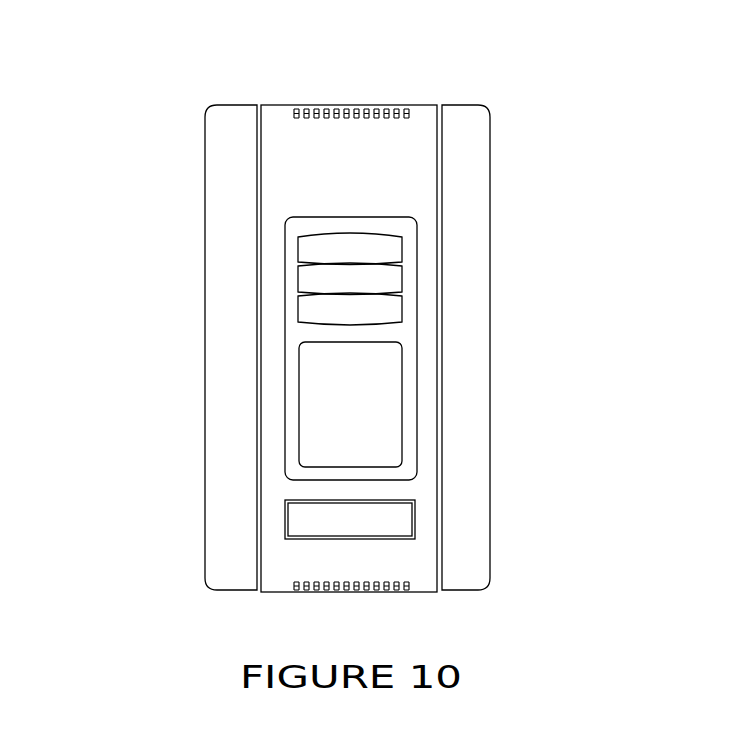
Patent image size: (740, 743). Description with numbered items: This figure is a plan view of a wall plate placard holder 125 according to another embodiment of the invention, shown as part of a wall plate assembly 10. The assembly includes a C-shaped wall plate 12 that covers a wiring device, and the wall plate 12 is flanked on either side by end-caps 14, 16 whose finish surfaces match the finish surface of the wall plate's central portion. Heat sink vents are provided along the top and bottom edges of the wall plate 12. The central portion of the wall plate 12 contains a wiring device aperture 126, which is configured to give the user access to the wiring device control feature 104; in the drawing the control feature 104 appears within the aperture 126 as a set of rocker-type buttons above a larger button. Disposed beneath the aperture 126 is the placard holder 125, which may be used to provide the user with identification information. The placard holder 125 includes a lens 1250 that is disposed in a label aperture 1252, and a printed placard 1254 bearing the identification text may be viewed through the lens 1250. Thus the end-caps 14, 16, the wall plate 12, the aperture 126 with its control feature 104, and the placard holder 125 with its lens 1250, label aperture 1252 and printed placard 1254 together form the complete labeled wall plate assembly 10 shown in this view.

The keypad control device 10 is at (120, 66).
The wall plate 12 is at (357, 173).
The end-cap 14 is at (215, 257).
The end-cap 16 is at (480, 238).
The wiring device control feature 104 is at (377, 374).
The wall plate placard holder 125 is at (412, 520).
The wiring device aperture 126 is at (400, 468).
The lens 1250 is at (397, 528).
The label aperture 1252 is at (305, 522).
The printed placard 1254 is at (300, 530).